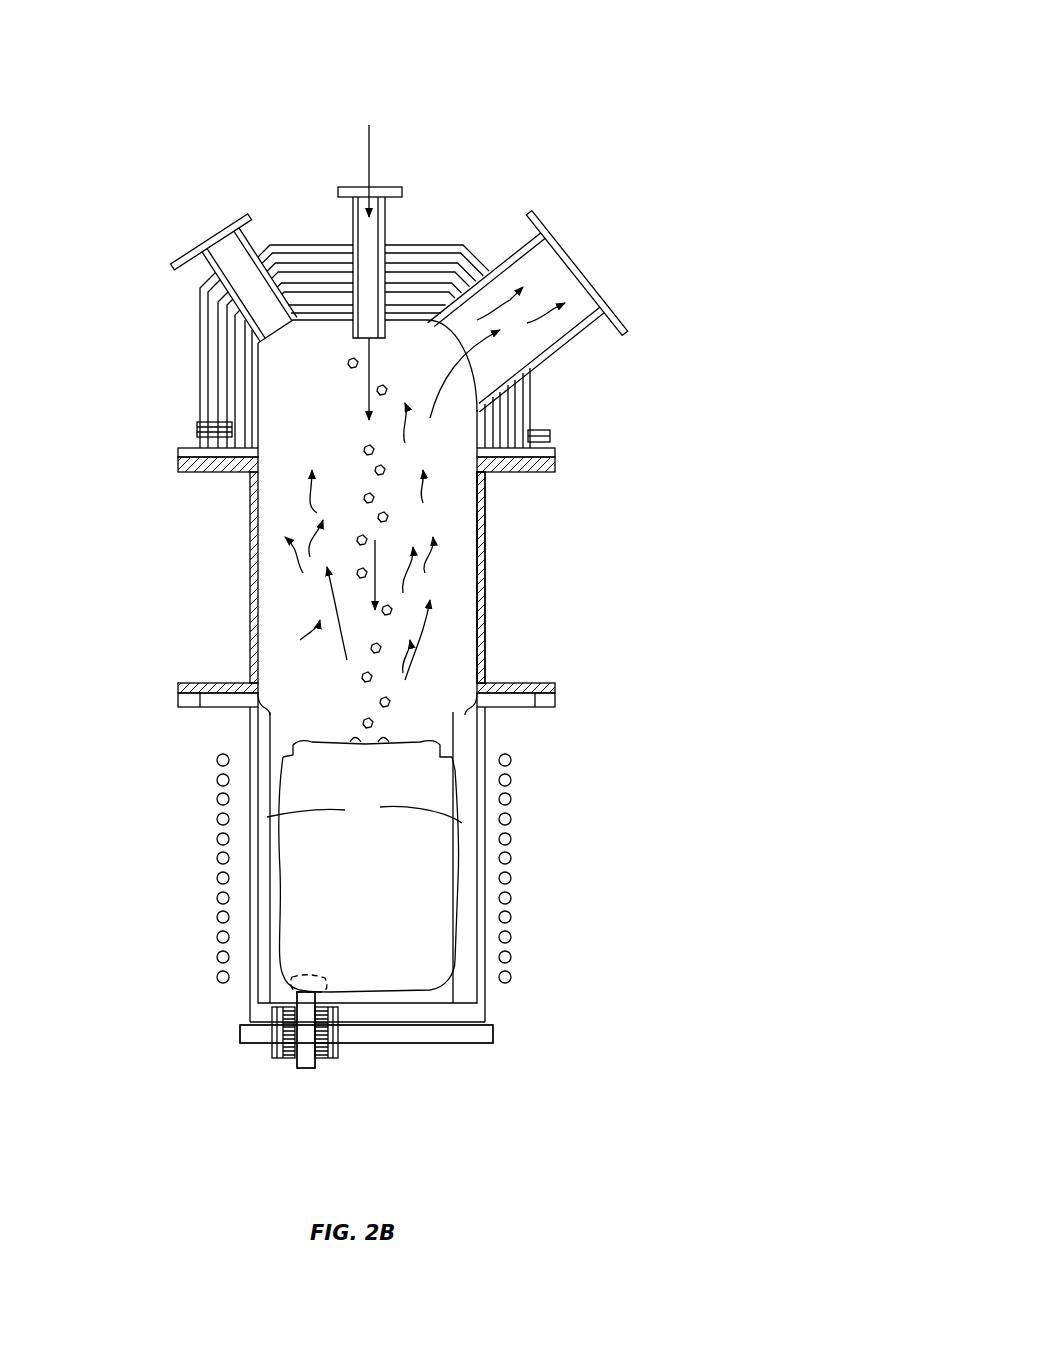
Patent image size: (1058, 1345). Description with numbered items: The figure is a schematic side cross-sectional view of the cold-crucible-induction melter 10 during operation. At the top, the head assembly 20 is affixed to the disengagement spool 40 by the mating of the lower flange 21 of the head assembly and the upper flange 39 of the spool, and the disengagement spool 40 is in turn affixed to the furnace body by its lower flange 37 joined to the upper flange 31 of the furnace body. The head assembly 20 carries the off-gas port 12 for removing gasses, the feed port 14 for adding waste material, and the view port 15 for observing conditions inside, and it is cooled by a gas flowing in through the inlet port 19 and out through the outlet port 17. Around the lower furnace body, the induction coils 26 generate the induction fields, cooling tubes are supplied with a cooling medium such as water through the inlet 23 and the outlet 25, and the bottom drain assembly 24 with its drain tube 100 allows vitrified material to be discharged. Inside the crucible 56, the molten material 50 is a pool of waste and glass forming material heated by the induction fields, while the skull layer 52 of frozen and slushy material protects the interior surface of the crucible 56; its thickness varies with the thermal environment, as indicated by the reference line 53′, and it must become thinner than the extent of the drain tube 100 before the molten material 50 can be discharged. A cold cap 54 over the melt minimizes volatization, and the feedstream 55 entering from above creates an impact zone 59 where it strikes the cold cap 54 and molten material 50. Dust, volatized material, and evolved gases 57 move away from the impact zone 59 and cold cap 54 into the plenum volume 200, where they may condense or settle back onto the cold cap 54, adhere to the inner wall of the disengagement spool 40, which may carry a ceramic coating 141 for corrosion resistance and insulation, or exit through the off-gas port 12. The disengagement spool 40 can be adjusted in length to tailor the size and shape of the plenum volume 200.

The cold-crucible-induction melter 10 is at (692, 117).
The off-gas port 12 is at (585, 266).
The feed port 14 is at (375, 187).
The view port 15 is at (213, 235).
The outlet port 17 is at (552, 435).
The inlet port 19 is at (195, 428).
The head assembly 20 is at (180, 352).
The lower flange 21 is at (178, 452).
The inlet 23 is at (235, 1033).
The bottom drain assembly 24 is at (332, 1058).
The outlet 25 is at (500, 1033).
The induction coils 26 is at (218, 760).
The upper flange 31 is at (523, 703).
The lower flange 37 is at (533, 686).
The upper flange 39 is at (178, 472).
The disengagement spool 40 is at (488, 583).
The molten material 50 is at (374, 886).
The skull layer 52 is at (364, 811).
The reference line 53′ is at (292, 977).
The cold cap 54 is at (415, 750).
The feedstream 55 is at (383, 125).
The crucible 56 is at (485, 853).
The dust, volatized material, and evolved gases 57 is at (478, 350).
The impact zone 59 is at (345, 727).
The drain tube 100 is at (305, 1060).
The ceramic coating 141 is at (477, 617).
The plenum volume 200 is at (453, 548).